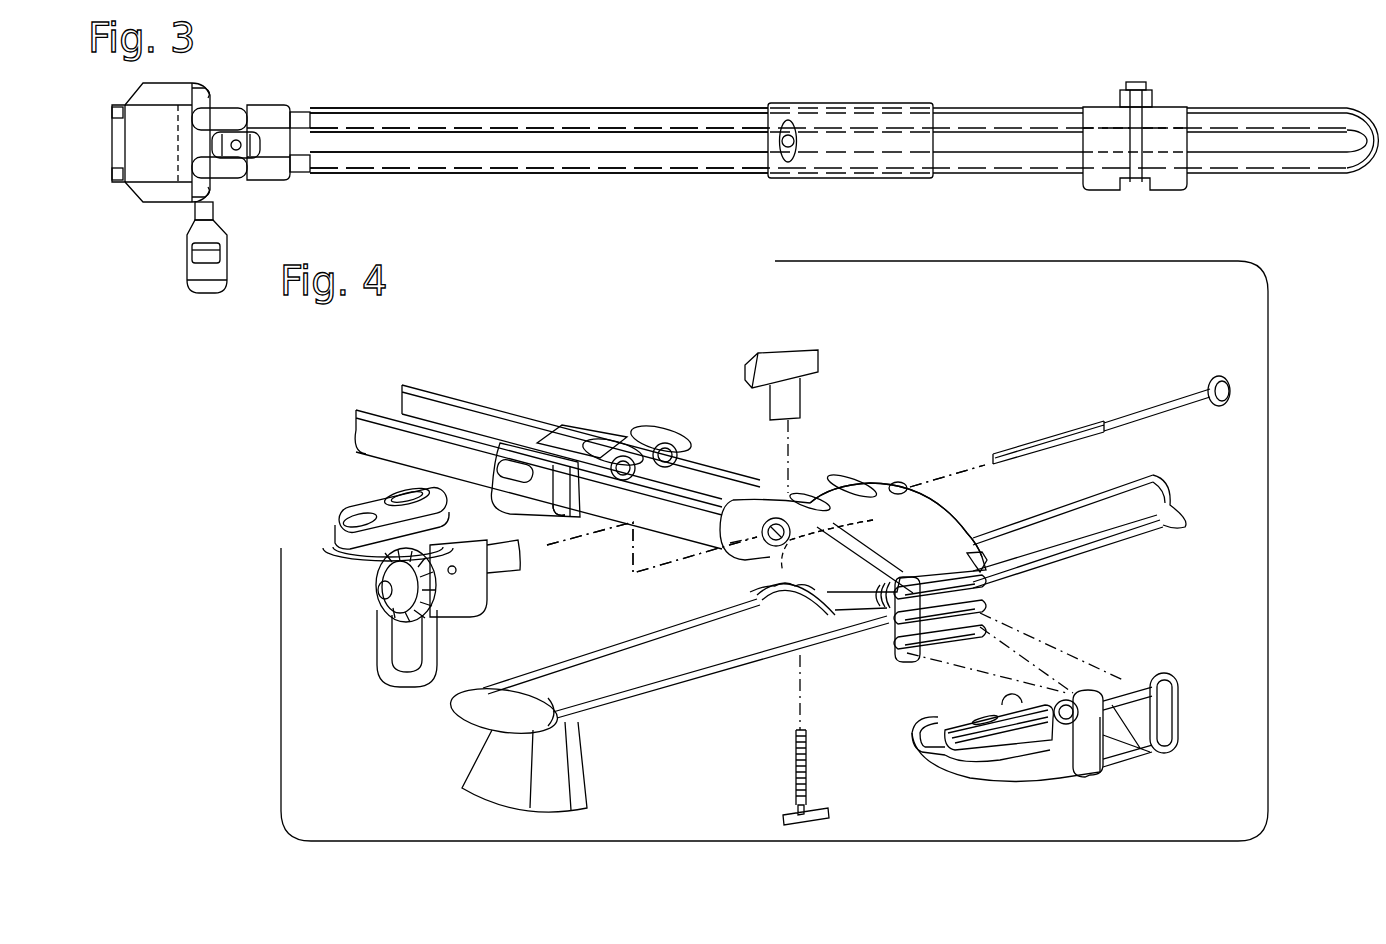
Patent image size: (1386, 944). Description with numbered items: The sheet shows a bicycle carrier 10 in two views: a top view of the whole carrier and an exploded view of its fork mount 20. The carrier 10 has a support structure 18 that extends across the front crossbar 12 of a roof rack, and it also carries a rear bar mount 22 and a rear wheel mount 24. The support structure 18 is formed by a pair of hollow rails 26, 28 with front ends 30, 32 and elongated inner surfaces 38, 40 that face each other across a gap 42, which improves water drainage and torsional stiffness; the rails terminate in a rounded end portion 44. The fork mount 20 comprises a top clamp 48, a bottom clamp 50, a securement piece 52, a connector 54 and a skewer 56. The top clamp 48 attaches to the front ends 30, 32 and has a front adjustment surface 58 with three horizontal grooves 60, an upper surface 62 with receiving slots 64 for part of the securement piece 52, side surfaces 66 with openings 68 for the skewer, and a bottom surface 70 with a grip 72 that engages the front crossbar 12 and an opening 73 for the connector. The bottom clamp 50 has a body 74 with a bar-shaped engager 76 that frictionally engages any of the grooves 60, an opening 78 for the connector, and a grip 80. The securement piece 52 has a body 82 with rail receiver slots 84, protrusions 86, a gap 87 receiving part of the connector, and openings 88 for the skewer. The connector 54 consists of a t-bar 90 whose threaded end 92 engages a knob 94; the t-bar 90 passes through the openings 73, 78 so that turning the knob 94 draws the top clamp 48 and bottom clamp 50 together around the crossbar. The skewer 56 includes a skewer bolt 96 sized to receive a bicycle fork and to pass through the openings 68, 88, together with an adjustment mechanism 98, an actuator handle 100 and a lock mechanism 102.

In FIG. 3, the bicycle carrier 10 is at (314, 62).
In FIG. 4, the bicycle carrier 10 is at (741, 417).
In FIG. 4, the front crossbar 12 is at (606, 716).
In FIG. 3, the support structure 18 is at (618, 74).
In FIG. 3, the fork mount 20 is at (105, 154).
In FIG. 4, the fork mount 20 is at (1111, 396).
In FIG. 3, the rear bar mount 22 is at (868, 91).
In FIG. 3, the rear wheel mount 24 is at (1172, 94).
In FIG. 3, the rail 26 is at (385, 166).
In FIG. 4, the rail 26 is at (358, 432).
In FIG. 3, the rail 28 is at (428, 112).
In FIG. 4, the rail 28 is at (458, 412).
In FIG. 4, the front end 30 is at (708, 572).
In FIG. 4, the front end 32 is at (851, 464).
In FIG. 3, the elongated inner surface 38 is at (528, 152).
In FIG. 3, the elongated inner surface 40 is at (492, 128).
In FIG. 3, the gap 42 is at (710, 130).
In FIG. 3, the rail end 44 is at (1360, 124).
In FIG. 4, the top clamp 48 is at (969, 498).
In FIG. 4, the bottom clamp 50 is at (1047, 737).
In FIG. 3, the securement piece 52 is at (270, 97).
In FIG. 4, the securement piece 52 is at (572, 413).
In FIG. 3, the connector 54 is at (253, 150).
In FIG. 4, the connector 54 is at (800, 740).
In FIG. 3, the skewer 56 is at (167, 256).
In FIG. 4, the skewer 56 is at (400, 576).
In FIG. 4, the front surface 58 is at (887, 642).
In FIG. 4, the grooves 60 is at (985, 637).
In FIG. 4, the upper surface 62 is at (925, 497).
In FIG. 4, the receiving slots 64 is at (804, 499).
In FIG. 4, the side surfaces 66 is at (970, 530).
In FIG. 4, the openings 68 is at (901, 483).
In FIG. 4, the bottom surface 70 is at (757, 597).
In FIG. 4, the grip 72 is at (779, 596).
In FIG. 4, the opening 73 is at (868, 520).
In FIG. 4, the body 74 is at (1073, 770).
In FIG. 4, the adjustment area engager 76 is at (1148, 682).
In FIG. 4, the opening 78 is at (985, 718).
In FIG. 4, the grip 80 is at (970, 745).
In FIG. 4, the body 82 is at (590, 437).
In FIG. 4, the rail receiver slots 84 is at (568, 512).
In FIG. 4, the protrusions 86 is at (655, 437).
In FIG. 3, the gap 87 is at (225, 153).
In FIG. 4, the gap 87 is at (623, 440).
In FIG. 4, the openings 88 is at (664, 468).
In FIG. 4, the t-bar 90 is at (826, 818).
In FIG. 4, the threaded end 92 is at (812, 760).
In FIG. 4, the knob 94 is at (797, 352).
In FIG. 4, the skewer bolt 96 is at (1192, 390).
In FIG. 4, the adjustment mechanism 98 is at (420, 608).
In FIG. 4, the actuator handle 100 is at (339, 541).
In FIG. 4, the lock mechanism 102 is at (403, 493).